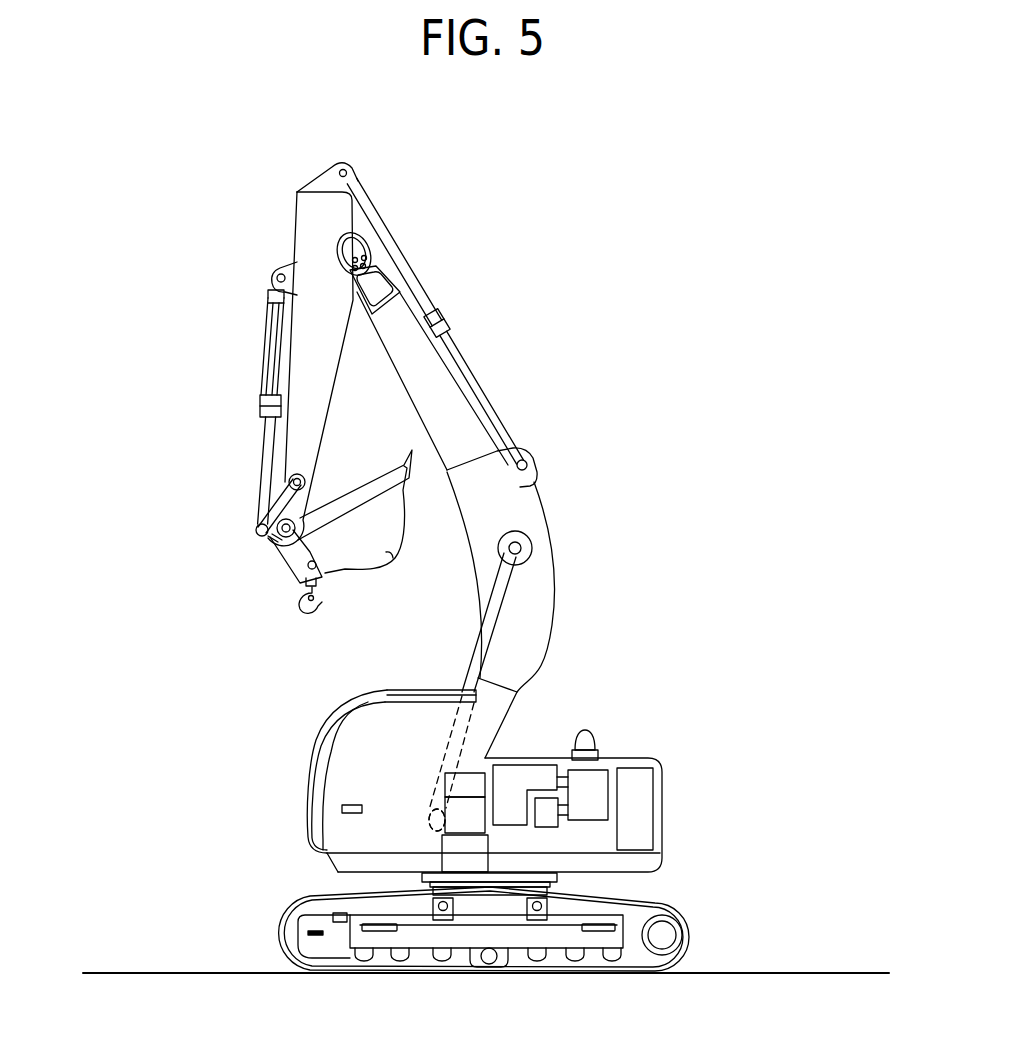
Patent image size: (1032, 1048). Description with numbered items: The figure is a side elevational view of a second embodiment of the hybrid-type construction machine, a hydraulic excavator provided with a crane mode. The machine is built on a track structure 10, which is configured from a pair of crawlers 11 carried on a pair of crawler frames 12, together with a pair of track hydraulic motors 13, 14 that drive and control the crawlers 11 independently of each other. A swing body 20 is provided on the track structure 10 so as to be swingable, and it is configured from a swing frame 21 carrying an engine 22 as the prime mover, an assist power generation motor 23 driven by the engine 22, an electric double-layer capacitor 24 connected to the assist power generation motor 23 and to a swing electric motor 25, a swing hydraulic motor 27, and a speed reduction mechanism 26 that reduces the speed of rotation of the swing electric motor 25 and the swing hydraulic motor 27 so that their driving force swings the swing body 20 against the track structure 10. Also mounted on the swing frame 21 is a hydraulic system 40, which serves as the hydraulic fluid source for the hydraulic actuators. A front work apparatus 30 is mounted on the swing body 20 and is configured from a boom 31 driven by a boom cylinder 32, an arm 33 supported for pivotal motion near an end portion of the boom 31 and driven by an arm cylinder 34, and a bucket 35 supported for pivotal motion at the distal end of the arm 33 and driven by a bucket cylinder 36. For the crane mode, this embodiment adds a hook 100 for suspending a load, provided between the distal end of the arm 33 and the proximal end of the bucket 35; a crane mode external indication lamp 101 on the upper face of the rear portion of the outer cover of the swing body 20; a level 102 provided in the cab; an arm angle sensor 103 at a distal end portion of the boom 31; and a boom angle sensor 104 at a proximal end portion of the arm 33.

The track structure 10 is at (286, 890).
The crawler 11 is at (698, 914).
The crawler frame 12 is at (462, 935).
The track hydraulic motor 13 is at (668, 940).
The track hydraulic motor 14 is at (662, 935).
The swing body 20 is at (316, 728).
The swing frame 21 is at (662, 863).
The engine 22 is at (600, 777).
The assist power generation motor 23 is at (547, 820).
The electric double-layer capacitor 24 is at (643, 793).
The swing electric motor 25 is at (463, 813).
The speed reduction mechanism 26 is at (445, 845).
The swing hydraulic motor 27 is at (455, 778).
The front work apparatus 30 is at (487, 258).
The boom 31 is at (540, 577).
The boom cylinder 32 is at (478, 647).
The arm 33 is at (305, 215).
The arm cylinder 34 is at (467, 377).
The bucket 35 is at (370, 563).
The bucket cylinder 36 is at (273, 340).
The hydraulic system 40 is at (520, 778).
The hook 100 is at (300, 604).
The crane mode external indication lamp 101 is at (583, 728).
The level 102 is at (343, 808).
The arm angle sensor 103 is at (358, 249).
The boom angle sensor 104 is at (425, 820).